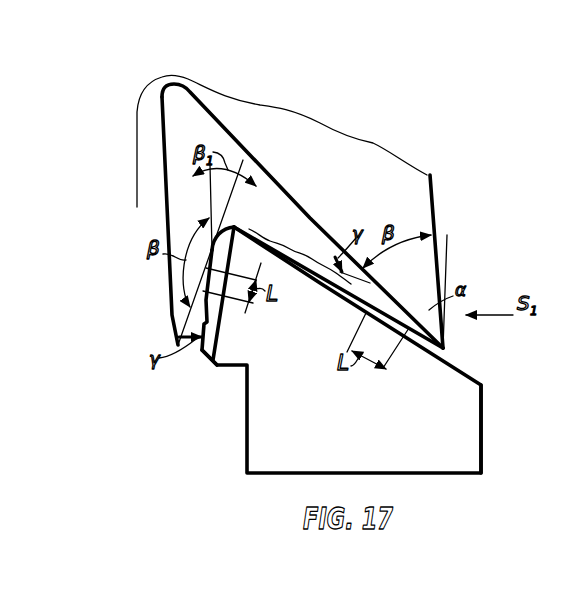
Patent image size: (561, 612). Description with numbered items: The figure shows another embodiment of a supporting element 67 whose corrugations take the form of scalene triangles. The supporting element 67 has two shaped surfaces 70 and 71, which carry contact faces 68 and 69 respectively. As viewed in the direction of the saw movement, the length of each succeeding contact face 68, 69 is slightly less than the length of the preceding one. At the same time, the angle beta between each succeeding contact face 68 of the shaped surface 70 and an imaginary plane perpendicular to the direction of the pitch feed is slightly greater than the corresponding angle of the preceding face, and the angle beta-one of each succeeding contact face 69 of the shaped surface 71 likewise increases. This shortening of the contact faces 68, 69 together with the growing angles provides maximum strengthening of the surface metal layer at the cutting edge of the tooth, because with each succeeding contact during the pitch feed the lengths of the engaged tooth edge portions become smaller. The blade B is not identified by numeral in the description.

The workpiece 67 is at (449, 478).
The cut layer (chip) 68 is at (338, 278).
The cutting edge 69 is at (176, 344).
The workpiece corner 70 is at (488, 380).
The step shoulder 71 is at (201, 359).
The blade B is at (436, 192).